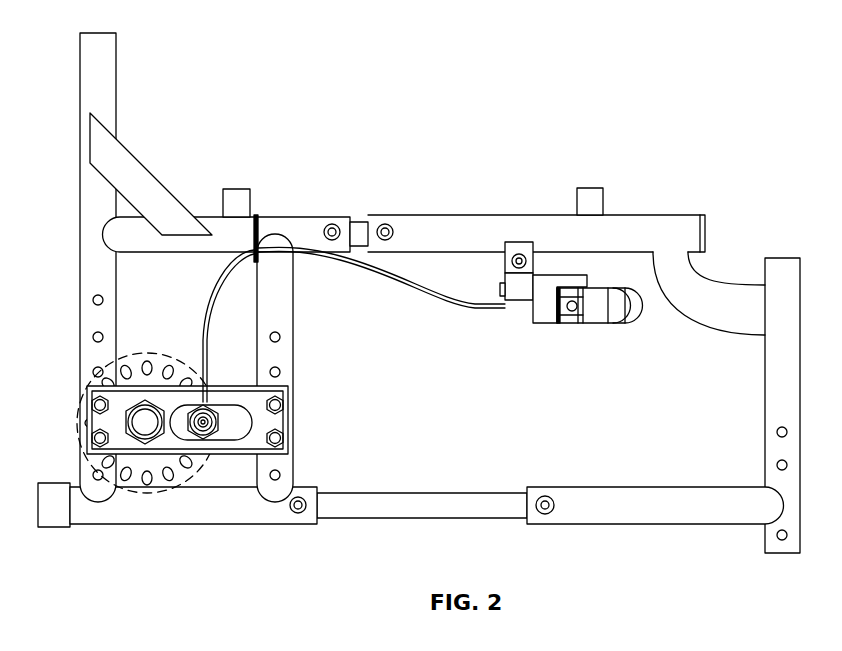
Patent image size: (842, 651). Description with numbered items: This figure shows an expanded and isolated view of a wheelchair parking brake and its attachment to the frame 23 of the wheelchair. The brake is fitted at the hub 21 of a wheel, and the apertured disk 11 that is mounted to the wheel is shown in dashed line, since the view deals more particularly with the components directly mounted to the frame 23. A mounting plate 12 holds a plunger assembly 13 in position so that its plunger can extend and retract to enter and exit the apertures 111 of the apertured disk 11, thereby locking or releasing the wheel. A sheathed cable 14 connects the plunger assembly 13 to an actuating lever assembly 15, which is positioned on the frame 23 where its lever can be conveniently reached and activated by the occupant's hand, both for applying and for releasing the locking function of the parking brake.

The apertured disk 11 is at (129, 494).
The apertures 111 is at (160, 483).
The mounting plate 12 is at (248, 444).
The plunger assembly 13 is at (217, 442).
The sheathed cable 14 is at (404, 287).
The lever assembly 15 is at (555, 306).
The hub 21 is at (160, 400).
The frame 23 is at (117, 84).